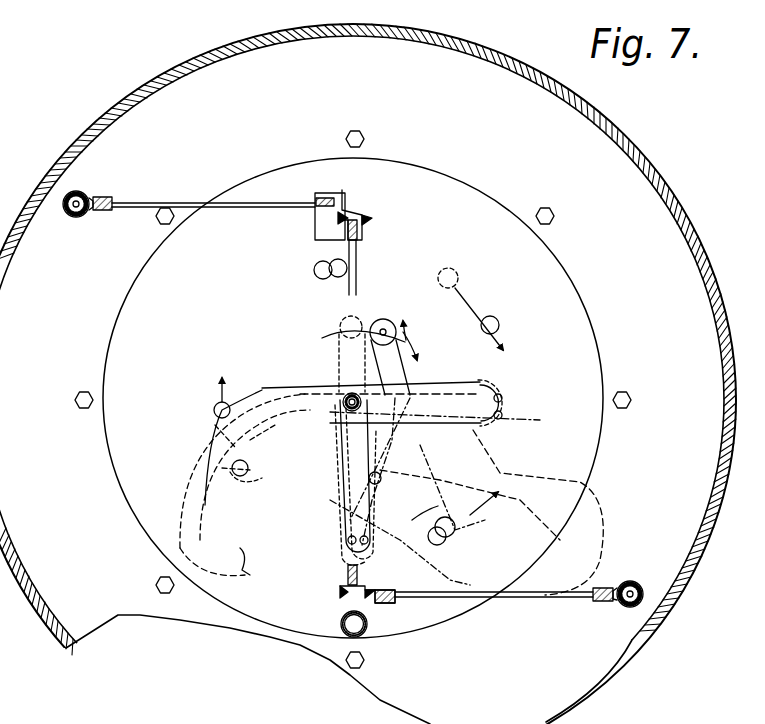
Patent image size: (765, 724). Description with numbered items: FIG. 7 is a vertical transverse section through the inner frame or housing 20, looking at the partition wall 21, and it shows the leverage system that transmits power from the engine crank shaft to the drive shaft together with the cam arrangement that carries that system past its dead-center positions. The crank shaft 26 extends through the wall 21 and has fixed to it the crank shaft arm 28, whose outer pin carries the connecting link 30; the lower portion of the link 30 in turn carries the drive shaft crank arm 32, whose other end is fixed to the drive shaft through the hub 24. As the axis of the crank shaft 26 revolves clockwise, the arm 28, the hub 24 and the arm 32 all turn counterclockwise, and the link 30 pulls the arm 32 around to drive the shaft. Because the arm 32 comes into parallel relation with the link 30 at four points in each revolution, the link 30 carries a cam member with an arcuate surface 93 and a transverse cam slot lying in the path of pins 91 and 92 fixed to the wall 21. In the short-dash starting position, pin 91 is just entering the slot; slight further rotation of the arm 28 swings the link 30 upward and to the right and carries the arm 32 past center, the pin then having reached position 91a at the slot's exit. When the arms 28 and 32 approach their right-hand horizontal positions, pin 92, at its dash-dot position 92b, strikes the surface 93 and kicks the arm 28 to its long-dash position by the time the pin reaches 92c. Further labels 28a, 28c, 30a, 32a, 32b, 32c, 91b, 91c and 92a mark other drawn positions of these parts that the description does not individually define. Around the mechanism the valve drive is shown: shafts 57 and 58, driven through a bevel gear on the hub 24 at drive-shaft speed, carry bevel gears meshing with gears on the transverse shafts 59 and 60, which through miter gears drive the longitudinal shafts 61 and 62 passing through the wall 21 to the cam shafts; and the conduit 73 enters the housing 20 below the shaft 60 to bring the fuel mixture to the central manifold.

The frame 20 is at (652, 157).
The partition wall 21 is at (556, 283).
The hub 24 is at (347, 402).
The crank shaft 26 is at (341, 322).
The crank arm 28 is at (352, 355).
The pin 28a is at (392, 328).
The arm end 28c is at (425, 385).
The connecting link 30 is at (338, 523).
The pin 30a is at (382, 486).
The crank arm 32 is at (340, 543).
The link end 32a is at (425, 500).
The link pin 32b is at (505, 423).
The link pin 32c is at (485, 388).
The upper shaft 57 is at (358, 253).
The lower shaft 58 is at (347, 572).
The transversely extending shaft 59 is at (190, 200).
The transversely extending shaft 60 is at (563, 598).
The longitudinally disposed shaft 61 is at (91, 196).
The longitudinally disposed shaft 62 is at (636, 585).
The conduit 73 is at (341, 623).
The pin 91 is at (249, 470).
The pin position 91a is at (215, 412).
The roller 91b is at (325, 276).
The roller 91c is at (318, 262).
The pin 92 is at (455, 275).
The pin position 92a is at (499, 325).
The pin position 92b is at (455, 521).
The pin position 92c is at (437, 545).
The arcuate surface 93 is at (186, 455).